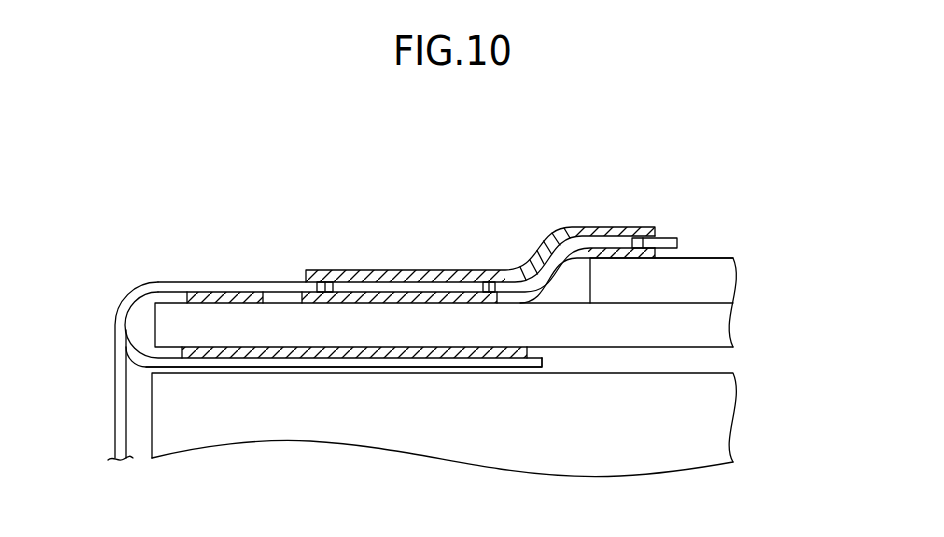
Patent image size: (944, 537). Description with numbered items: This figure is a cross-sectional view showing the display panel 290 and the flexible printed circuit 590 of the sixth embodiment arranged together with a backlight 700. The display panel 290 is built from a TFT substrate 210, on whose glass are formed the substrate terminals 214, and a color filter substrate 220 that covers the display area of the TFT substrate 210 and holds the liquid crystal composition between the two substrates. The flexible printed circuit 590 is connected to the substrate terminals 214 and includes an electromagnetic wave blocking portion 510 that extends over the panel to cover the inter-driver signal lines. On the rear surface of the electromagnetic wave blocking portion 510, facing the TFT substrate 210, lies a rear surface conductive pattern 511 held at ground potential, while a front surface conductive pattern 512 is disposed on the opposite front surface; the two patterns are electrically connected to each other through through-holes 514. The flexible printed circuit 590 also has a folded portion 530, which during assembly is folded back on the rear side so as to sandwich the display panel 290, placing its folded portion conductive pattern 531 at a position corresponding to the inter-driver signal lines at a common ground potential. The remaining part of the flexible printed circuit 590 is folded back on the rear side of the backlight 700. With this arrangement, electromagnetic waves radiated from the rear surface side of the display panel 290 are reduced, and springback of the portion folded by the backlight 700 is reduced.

The flexible printed circuit 590 is at (100, 285).
The electromagnetic wave blocking portion 510 is at (457, 233).
The through-holes 514 is at (323, 285).
The rear surface conductive pattern 511 is at (585, 240).
The front surface conductive pattern 512 is at (623, 237).
The substrate terminals 214 is at (218, 296).
The color filter substrate 220 is at (723, 282).
The TFT substrate 210 is at (715, 322).
The display panel 290 is at (765, 222).
The backlight 700 is at (720, 412).
The folded portion conductive pattern 531 is at (365, 355).
The folded portion 530 is at (471, 367).